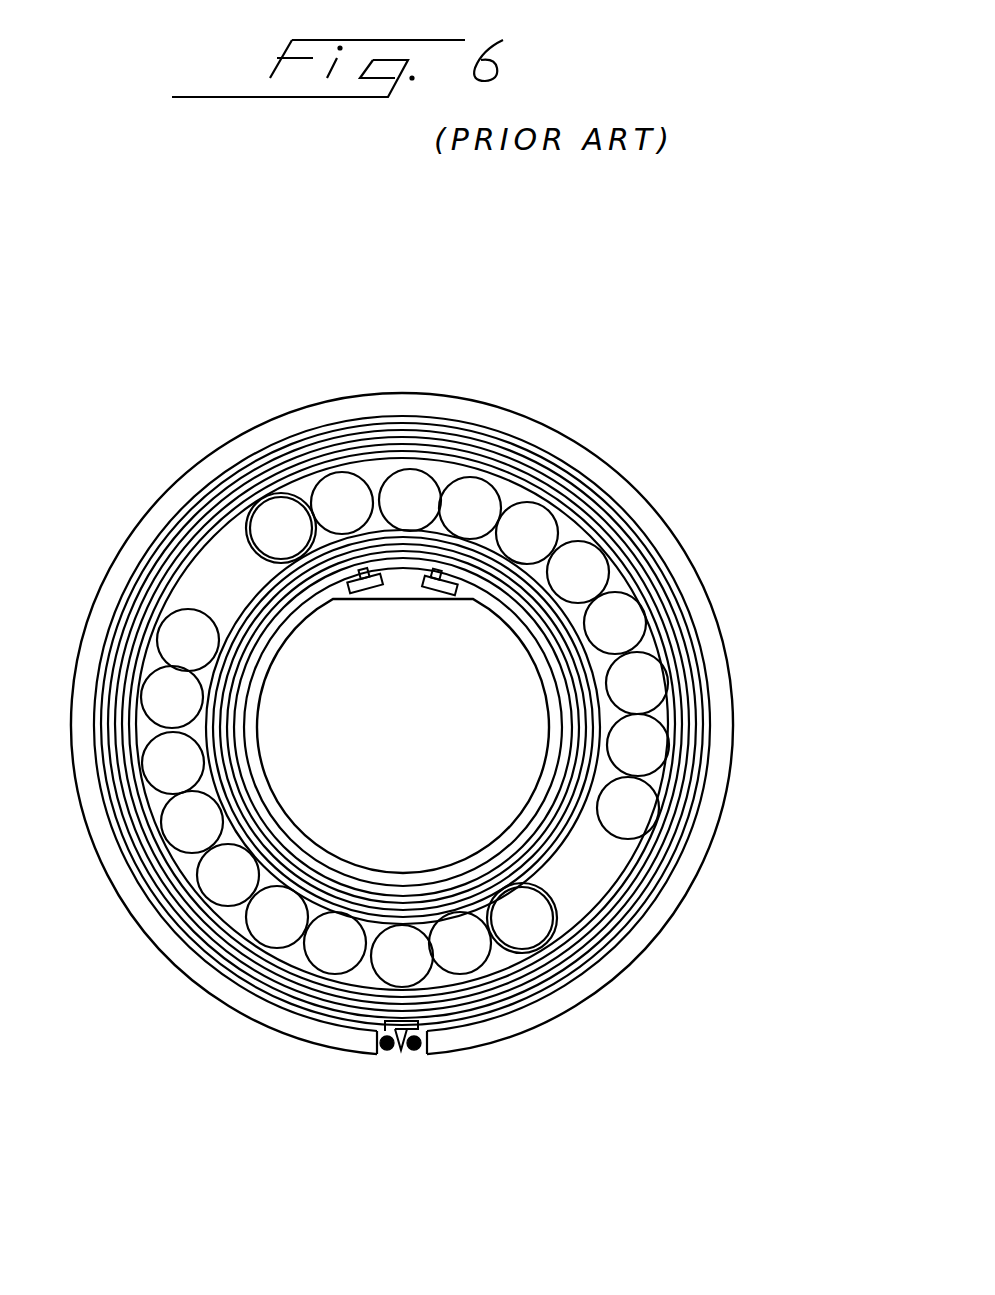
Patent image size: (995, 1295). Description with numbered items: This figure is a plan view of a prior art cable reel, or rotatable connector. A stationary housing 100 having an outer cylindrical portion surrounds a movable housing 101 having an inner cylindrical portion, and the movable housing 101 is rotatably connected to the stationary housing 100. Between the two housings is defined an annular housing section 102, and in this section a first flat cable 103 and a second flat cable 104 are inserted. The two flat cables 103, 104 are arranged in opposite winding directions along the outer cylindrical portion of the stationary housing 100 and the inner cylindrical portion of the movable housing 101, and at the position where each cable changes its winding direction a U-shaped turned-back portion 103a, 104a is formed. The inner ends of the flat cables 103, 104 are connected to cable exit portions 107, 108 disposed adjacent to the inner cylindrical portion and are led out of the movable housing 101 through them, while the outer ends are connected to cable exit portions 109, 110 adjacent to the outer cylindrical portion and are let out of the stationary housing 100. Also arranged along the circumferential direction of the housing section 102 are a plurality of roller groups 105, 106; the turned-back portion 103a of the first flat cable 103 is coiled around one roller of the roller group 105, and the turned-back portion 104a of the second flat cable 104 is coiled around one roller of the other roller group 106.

The stationary housing 100 is at (712, 835).
The movable housing 101 is at (549, 733).
The annular housing section 102 is at (607, 877).
The first flat cable 103 is at (503, 957).
The turned-back portion 103a is at (556, 905).
The second flat cable 104 is at (378, 527).
The turned-back portion 104a is at (250, 548).
The roller group 105 is at (217, 883).
The roller group 106 is at (652, 677).
The cable exit portion 107 is at (368, 594).
The cable exit portion 108 is at (430, 594).
The cable exit portion 109 is at (414, 1052).
The cable exit portion 110 is at (387, 1052).